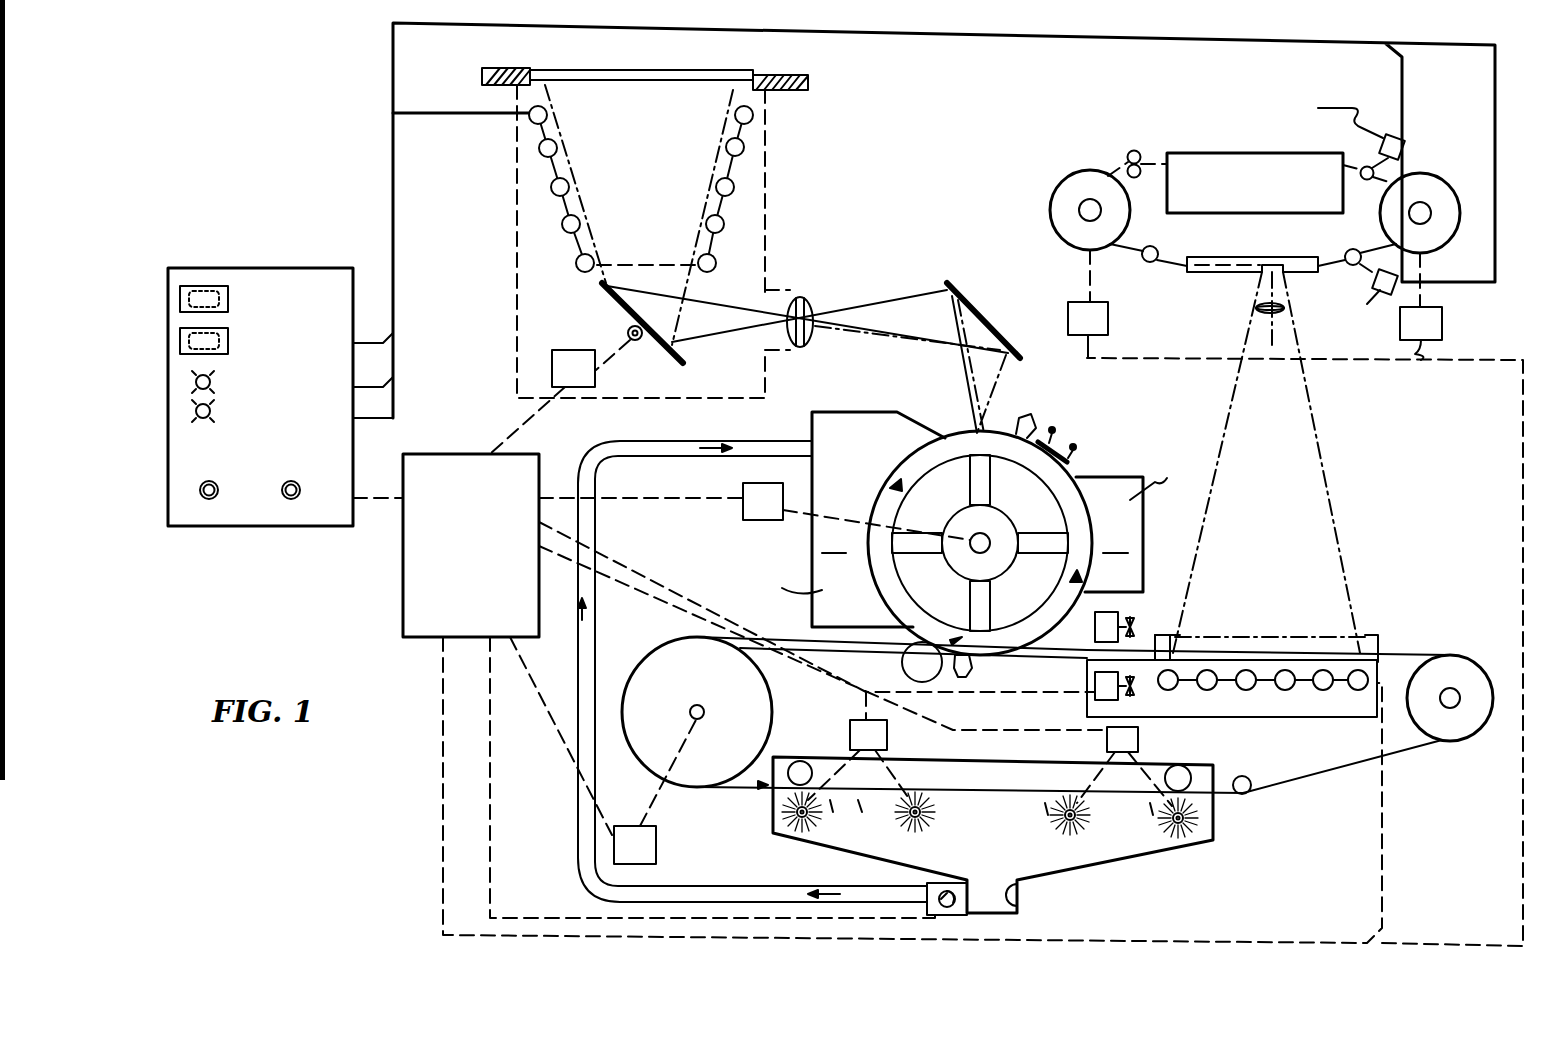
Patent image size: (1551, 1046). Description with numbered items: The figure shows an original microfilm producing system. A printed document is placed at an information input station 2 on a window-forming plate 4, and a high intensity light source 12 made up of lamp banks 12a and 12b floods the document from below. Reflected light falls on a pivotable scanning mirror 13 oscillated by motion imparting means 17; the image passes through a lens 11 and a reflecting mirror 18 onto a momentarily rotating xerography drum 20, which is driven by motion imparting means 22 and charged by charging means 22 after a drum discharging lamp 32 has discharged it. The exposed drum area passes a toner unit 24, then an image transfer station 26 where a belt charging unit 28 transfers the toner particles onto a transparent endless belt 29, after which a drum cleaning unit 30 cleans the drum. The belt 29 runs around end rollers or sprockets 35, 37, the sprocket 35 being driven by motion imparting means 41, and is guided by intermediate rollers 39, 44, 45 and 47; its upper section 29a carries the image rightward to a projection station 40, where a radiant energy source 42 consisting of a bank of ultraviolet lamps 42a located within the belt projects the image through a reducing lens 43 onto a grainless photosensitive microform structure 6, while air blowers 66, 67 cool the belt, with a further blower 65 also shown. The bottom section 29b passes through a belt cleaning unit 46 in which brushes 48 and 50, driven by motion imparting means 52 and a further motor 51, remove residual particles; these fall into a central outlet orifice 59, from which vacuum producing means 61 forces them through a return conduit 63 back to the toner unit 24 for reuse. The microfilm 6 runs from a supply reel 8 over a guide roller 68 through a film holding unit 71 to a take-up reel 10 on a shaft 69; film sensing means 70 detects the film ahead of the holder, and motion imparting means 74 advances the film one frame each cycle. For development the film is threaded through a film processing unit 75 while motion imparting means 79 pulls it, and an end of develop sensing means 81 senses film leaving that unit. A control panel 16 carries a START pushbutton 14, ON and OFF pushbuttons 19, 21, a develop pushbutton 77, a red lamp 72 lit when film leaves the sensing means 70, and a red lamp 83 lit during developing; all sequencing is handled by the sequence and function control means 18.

The information input station 2 is at (648, 62).
The window-forming plate 4 is at (624, 80).
The grainless photosensitive microform structure 6 is at (1330, 258).
The supply reel 8 is at (1448, 213).
The take-up reel 10 is at (1050, 203).
The lens 11 is at (812, 302).
The illumination lamps 12 is at (608, 203).
The lamp bank 12a is at (586, 280).
The lamp bank 12b is at (698, 276).
The pivotable scanning mirror 13 is at (616, 306).
The START pushbutton 14 is at (228, 299).
The control panel 16 is at (260, 254).
The motion imparting means 17 is at (556, 350).
The sequence and function control means 18 is at (458, 453).
The ON pushbutton 19 is at (202, 498).
The xerography drum 20 is at (908, 446).
The OFF pushbutton 21 is at (284, 497).
The charging means 22 is at (1028, 413).
The toner unit 24 is at (836, 519).
The image transfer station 26 is at (974, 648).
The belt charging unit 28 is at (968, 678).
The transparent belt 29 is at (1073, 710).
The upper horizontally oriented section 29a is at (1284, 650).
The bottom horizontally oriented section 29b is at (1010, 790).
The drum cleaning unit 30 is at (1139, 507).
The drum discharging lamp 32 is at (1060, 440).
The end roller or sprocket 35 is at (666, 650).
The end roller or sprocket 37 is at (1460, 672).
The intermediate roller 39 is at (903, 662).
The projection station 40 is at (1365, 636).
The motion imparting means 41 is at (656, 846).
The source of radiant energy 42 is at (1232, 703).
The ultraviolet light producing lamps 42a is at (1222, 692).
The reducing lens 43 is at (1257, 315).
The intermediate roller 44 is at (1270, 757).
The intermediate roller 45 is at (1183, 764).
The belt cleaning unit 46 is at (1192, 852).
The intermediate roller 47 is at (806, 760).
The brush 48 is at (1160, 823).
The brush 50 is at (905, 822).
The brush motor 51 is at (887, 738).
The motion imparting means 52 is at (1138, 740).
The central outlet orifice 59 is at (1022, 904).
The vacuum producing means 61 is at (927, 892).
The toner return conduit 63 is at (762, 886).
The fan motor 65 is at (1132, 624).
The air blower 66 is at (1424, 206).
The air blower 67 is at (1094, 694).
The guide roller 68 is at (1362, 249).
The shaft 69 is at (1090, 198).
The film sensing means 70 is at (1405, 282).
The film holding unit 71 is at (1240, 256).
The red lamp 72 is at (210, 382).
The motion imparting means 74 is at (1108, 320).
The film processing unit 75 is at (1190, 152).
The pushbutton 77 is at (228, 342).
The motion imparting means 79 is at (1442, 328).
The end of develop sensing means 81 is at (1402, 140).
The red colored lamp 83 is at (210, 411).